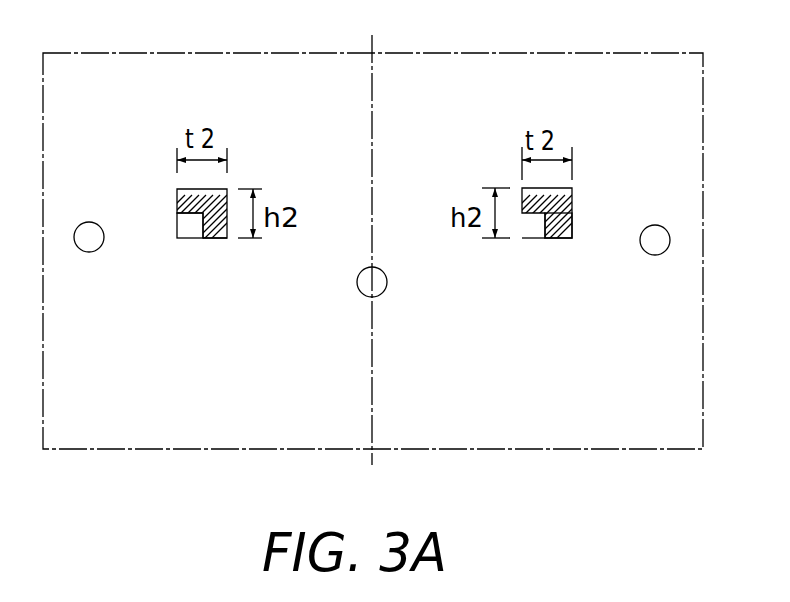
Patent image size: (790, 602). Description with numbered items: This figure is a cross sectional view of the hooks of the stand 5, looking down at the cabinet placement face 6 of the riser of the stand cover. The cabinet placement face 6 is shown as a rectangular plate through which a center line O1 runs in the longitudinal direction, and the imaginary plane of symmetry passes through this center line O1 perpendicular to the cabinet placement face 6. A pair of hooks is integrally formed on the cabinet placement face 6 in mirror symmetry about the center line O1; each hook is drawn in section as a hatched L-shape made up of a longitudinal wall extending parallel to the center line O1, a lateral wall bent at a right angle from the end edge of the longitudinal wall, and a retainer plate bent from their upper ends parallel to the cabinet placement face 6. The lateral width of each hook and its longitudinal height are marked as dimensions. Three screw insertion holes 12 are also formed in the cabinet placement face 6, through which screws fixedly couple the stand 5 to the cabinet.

The stand 5 is at (431, 50).
The cabinet placement face 6 is at (308, 87).
The screw insertion holes 12 is at (87, 221).
The center line O1 is at (373, 413).